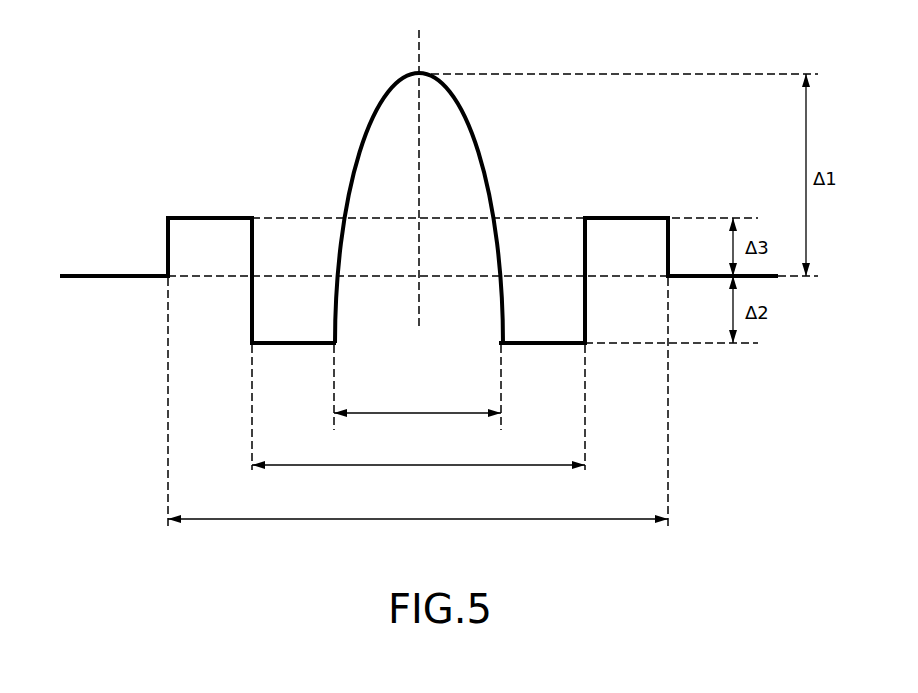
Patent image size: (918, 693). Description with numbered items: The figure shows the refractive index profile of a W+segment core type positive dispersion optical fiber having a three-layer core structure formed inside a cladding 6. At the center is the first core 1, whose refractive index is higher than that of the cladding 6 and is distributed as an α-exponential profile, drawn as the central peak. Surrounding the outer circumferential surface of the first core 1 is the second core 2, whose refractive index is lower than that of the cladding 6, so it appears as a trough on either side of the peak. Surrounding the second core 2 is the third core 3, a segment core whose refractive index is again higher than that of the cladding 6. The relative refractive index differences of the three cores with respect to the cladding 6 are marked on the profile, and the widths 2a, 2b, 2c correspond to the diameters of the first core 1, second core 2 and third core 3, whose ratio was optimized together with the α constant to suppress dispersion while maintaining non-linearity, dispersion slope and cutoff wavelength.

The first core 1 is at (470, 123).
The second core 2 is at (295, 340).
The third core 3 is at (212, 216).
The cladding 6 is at (110, 273).
The first core diameter 2a is at (417, 424).
The second core diameter 2b is at (418, 478).
The third core diameter 2c is at (418, 533).